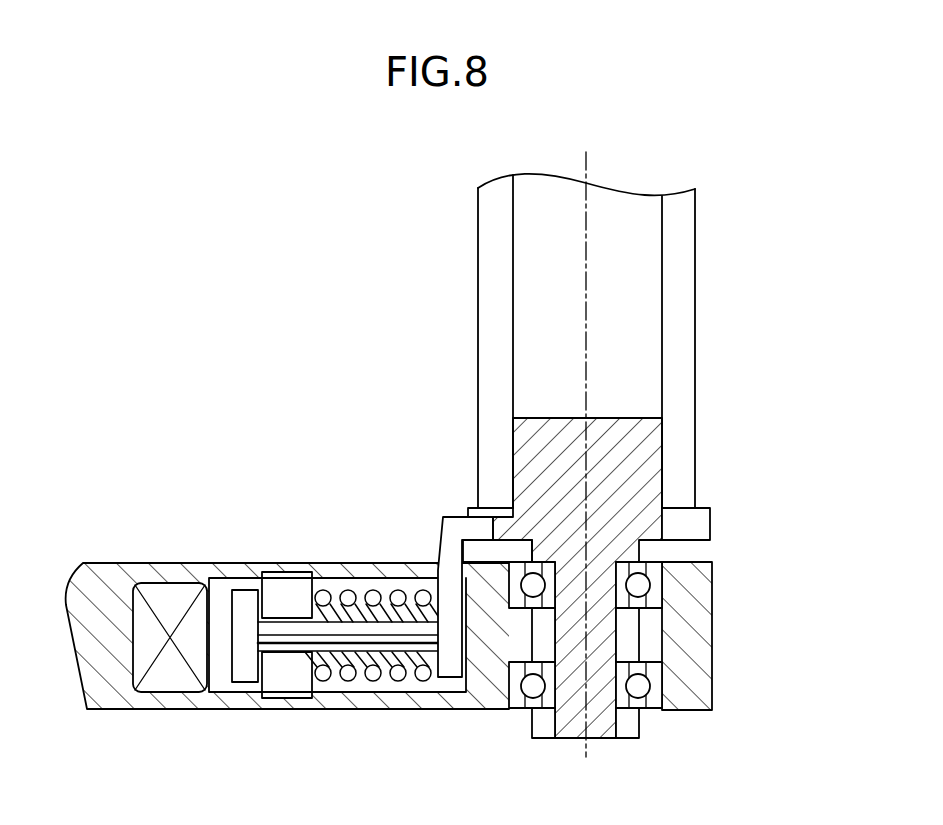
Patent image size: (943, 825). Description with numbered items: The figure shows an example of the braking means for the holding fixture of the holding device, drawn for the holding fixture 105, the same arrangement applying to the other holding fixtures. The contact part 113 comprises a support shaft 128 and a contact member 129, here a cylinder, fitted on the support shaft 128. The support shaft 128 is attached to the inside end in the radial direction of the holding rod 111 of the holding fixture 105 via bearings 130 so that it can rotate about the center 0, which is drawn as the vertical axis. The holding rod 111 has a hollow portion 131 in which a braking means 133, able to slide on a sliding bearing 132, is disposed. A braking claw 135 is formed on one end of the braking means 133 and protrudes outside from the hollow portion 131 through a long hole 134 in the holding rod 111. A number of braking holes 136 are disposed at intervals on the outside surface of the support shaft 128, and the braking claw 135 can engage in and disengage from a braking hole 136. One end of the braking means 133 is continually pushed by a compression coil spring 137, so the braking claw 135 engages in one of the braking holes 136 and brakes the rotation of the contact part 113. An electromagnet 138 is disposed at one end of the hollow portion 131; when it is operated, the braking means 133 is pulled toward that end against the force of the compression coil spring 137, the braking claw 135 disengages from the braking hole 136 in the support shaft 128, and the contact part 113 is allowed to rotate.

The center 0 is at (588, 182).
The holding fixture 105 is at (338, 312).
The holding rod 111 is at (246, 695).
The contact part 113 is at (724, 156).
The support shaft 128 is at (644, 452).
The contact member 129 is at (682, 227).
The bearing 130 is at (657, 583).
The hollow portion 131 is at (392, 680).
The sliding bearing 132 is at (282, 577).
The braking means 133 is at (352, 632).
The long hole 134 is at (418, 562).
The braking claw 135 is at (455, 527).
The braking hole 136 is at (697, 527).
The compression coil spring 137 is at (341, 596).
The electromagnet 138 is at (162, 672).